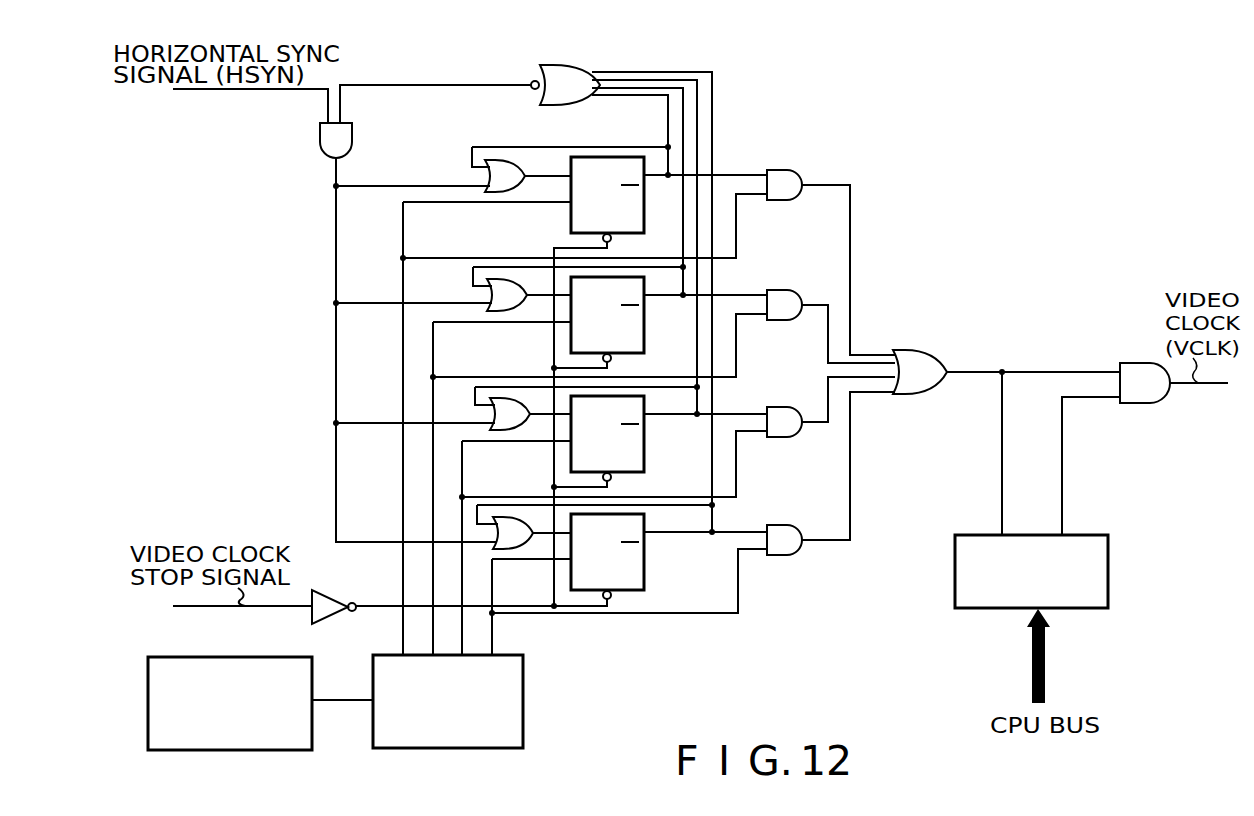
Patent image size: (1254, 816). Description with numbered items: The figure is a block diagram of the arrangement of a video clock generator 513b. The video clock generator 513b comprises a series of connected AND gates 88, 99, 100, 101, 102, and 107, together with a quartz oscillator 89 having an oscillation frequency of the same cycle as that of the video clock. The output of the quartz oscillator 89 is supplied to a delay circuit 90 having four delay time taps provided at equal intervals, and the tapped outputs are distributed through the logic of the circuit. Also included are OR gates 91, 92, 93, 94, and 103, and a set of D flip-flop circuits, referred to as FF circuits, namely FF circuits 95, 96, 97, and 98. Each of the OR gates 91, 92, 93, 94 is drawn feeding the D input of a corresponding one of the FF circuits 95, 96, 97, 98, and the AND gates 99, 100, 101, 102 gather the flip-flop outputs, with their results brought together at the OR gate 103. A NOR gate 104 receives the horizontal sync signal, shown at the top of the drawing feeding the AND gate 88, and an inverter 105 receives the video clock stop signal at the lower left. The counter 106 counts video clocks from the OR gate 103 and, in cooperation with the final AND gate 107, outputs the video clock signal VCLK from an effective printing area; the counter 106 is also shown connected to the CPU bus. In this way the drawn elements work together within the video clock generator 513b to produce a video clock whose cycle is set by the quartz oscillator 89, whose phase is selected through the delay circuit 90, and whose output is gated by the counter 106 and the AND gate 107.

The AND gate 88 is at (352, 132).
The quartz oscillator 89 is at (228, 657).
The delay circuit 90 is at (523, 690).
The OR gate 91 is at (500, 161).
The OR gate 92 is at (494, 280).
The OR gate 93 is at (497, 400).
The OR gate 94 is at (505, 519).
The D flip-flop circuit 95 is at (603, 158).
The D flip-flop circuit 96 is at (644, 330).
The D flip-flop circuit 97 is at (644, 458).
The D flip-flop circuit 98 is at (644, 575).
The AND gate 99 is at (778, 170).
The AND gate 100 is at (775, 290).
The AND gate 101 is at (775, 407).
The AND gate 102 is at (780, 526).
The OR gate 103 is at (912, 353).
The NOR gate 104 is at (548, 72).
The inverter 105 is at (342, 590).
The counter 106 is at (1108, 568).
The AND gate 107 is at (1136, 363).
The video clock generator 513b is at (788, 597).